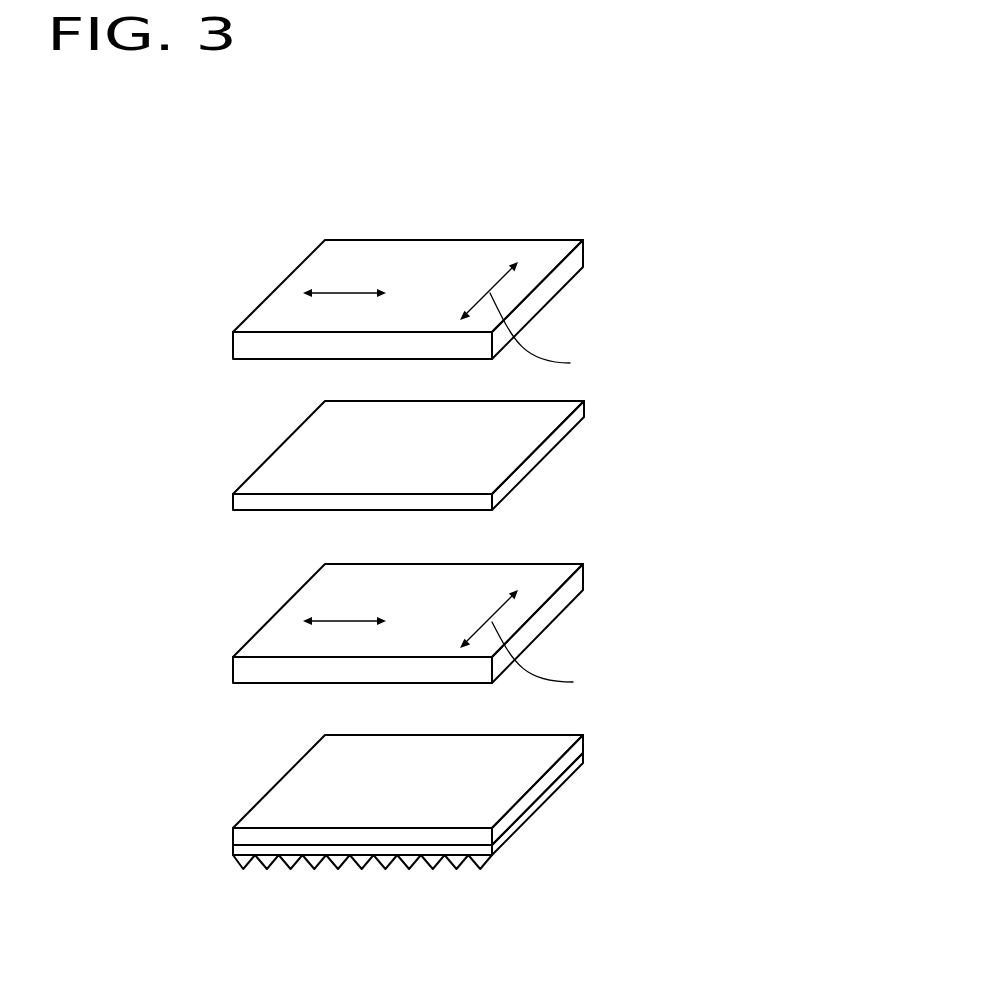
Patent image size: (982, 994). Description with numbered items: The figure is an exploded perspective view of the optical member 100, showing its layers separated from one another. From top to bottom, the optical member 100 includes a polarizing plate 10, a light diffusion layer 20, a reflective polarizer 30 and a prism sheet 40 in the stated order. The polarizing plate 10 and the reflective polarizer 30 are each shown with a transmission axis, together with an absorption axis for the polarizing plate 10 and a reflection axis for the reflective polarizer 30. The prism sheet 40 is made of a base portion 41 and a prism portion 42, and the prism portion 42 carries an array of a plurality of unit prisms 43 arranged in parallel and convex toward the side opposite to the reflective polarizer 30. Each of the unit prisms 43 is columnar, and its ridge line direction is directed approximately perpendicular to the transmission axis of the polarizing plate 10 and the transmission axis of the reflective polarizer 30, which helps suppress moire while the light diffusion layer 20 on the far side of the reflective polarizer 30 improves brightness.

The optical member 100 is at (607, 196).
The polarizing plate 10 is at (567, 277).
The light diffusion layer 20 is at (572, 425).
The reflective polarizer 30 is at (573, 591).
The prism sheet 40 is at (472, 824).
The base portion 41 is at (582, 744).
The prism portion 42 is at (585, 759).
The unit prisms 43 is at (452, 863).